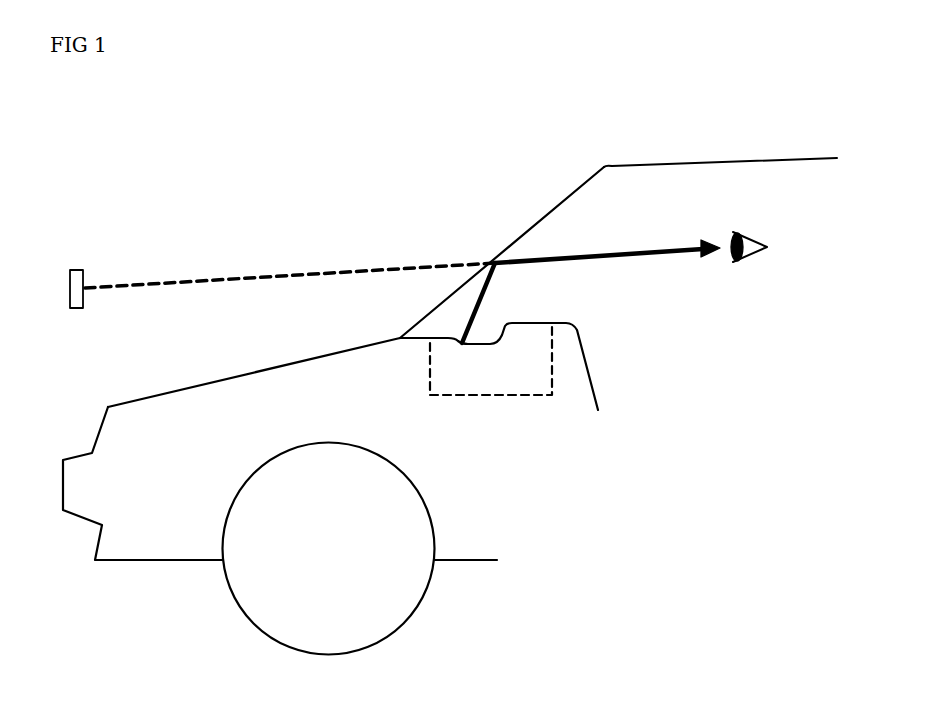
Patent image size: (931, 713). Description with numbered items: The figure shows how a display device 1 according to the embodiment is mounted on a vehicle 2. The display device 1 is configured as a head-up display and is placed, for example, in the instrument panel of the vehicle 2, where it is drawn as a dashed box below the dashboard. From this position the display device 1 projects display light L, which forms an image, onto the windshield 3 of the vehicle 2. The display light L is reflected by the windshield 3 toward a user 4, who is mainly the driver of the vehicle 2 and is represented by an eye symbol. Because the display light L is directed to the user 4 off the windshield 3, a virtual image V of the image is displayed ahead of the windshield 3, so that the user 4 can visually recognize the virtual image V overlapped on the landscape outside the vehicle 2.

The display device 1 is at (520, 395).
The vehicle 2 is at (426, 199).
The windshield 3 is at (548, 213).
The user 4 is at (774, 232).
The display light L is at (627, 256).
The virtual image V is at (78, 268).